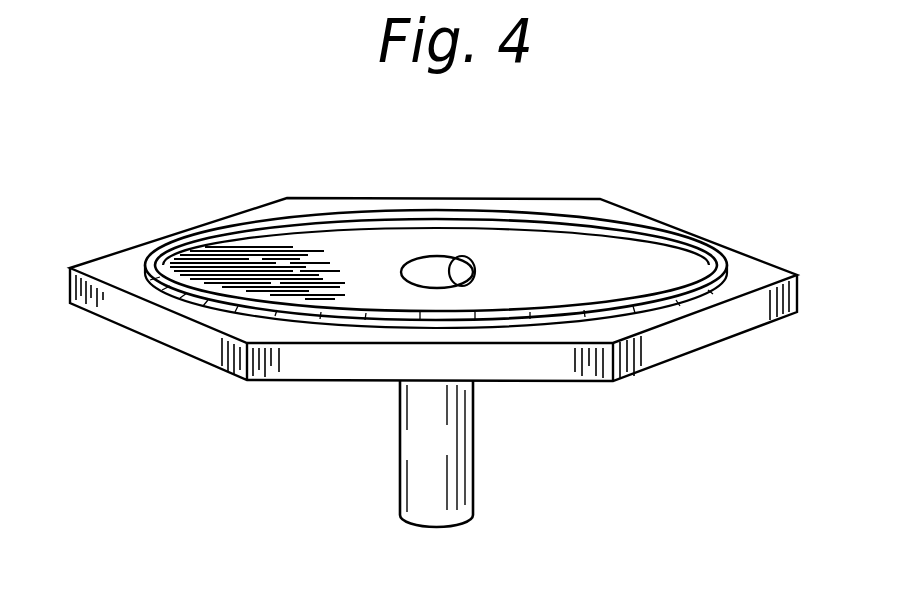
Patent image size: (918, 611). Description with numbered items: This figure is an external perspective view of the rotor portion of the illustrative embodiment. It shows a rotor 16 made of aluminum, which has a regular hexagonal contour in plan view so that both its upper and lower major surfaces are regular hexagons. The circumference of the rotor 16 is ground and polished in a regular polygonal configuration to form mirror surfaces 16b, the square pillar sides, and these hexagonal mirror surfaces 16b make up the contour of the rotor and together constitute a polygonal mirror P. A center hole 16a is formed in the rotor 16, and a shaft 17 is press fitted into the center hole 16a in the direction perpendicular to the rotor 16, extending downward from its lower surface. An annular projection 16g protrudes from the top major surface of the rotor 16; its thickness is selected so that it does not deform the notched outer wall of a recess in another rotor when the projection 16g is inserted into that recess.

The polygonal mirror P is at (562, 192).
The rotor 16 is at (748, 275).
The center hole 16a is at (461, 256).
The mirror surfaces 16b is at (147, 316).
The annular projection 16g is at (466, 209).
The shaft 17 is at (447, 458).